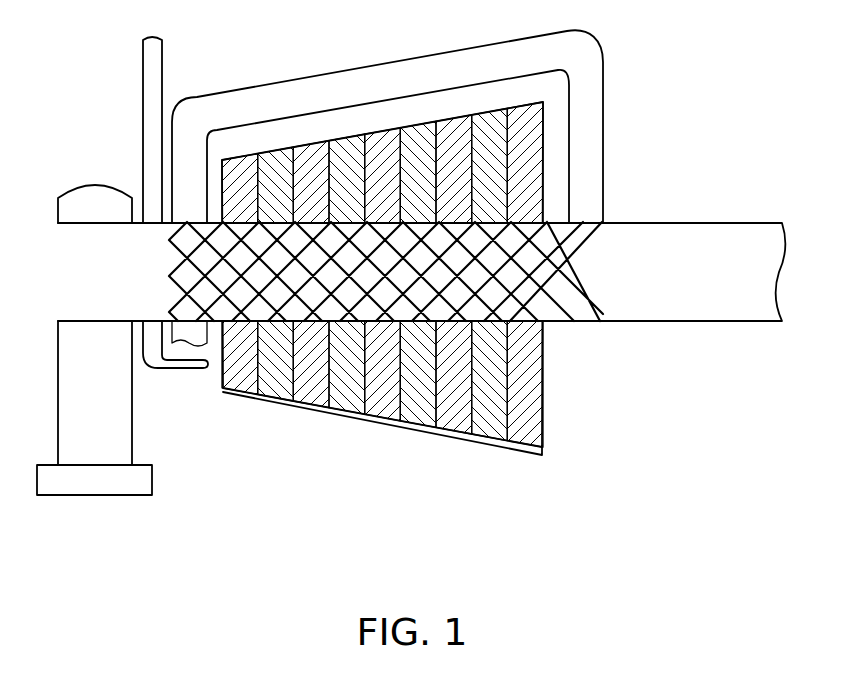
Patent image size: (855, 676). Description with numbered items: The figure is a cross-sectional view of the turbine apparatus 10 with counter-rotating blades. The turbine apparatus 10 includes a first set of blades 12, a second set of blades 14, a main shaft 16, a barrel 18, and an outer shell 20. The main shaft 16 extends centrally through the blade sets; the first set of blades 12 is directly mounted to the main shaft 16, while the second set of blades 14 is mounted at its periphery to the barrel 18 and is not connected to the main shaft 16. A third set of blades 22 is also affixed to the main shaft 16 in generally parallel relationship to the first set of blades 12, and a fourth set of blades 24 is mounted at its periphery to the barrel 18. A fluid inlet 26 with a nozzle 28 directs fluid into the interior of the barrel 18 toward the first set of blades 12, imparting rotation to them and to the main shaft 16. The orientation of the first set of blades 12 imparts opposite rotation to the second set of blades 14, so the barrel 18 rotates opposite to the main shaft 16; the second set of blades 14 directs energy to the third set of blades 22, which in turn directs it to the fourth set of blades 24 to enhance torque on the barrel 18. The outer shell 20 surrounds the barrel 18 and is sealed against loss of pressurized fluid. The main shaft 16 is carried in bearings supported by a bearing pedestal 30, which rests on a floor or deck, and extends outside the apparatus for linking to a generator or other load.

The turbine apparatus 10 is at (684, 67).
The first set of blades 12 is at (245, 380).
The second set of blades 14 is at (280, 388).
The main shaft 16 is at (735, 235).
The barrel 18 is at (379, 308).
The outer shell 20 is at (472, 65).
The third set of blades 22 is at (313, 397).
The fourth set of blades 24 is at (353, 402).
The fluid inlet 26 is at (157, 62).
The nozzle 28 is at (167, 372).
The bearing pedestal 30 is at (75, 388).